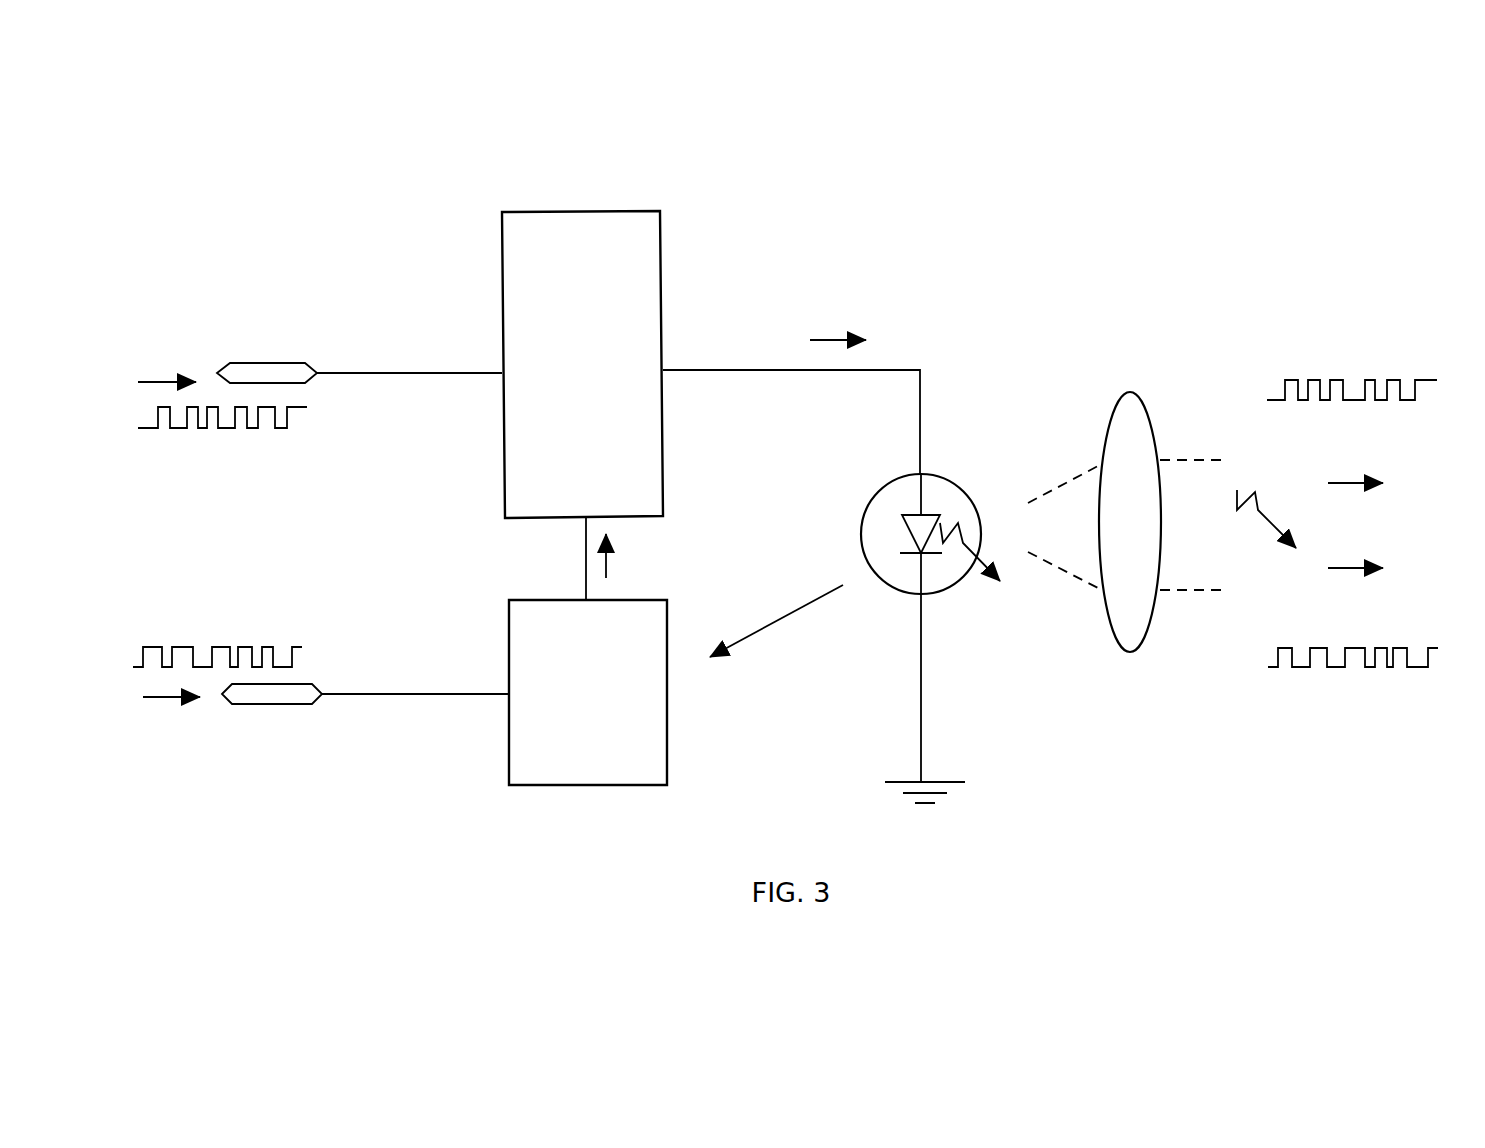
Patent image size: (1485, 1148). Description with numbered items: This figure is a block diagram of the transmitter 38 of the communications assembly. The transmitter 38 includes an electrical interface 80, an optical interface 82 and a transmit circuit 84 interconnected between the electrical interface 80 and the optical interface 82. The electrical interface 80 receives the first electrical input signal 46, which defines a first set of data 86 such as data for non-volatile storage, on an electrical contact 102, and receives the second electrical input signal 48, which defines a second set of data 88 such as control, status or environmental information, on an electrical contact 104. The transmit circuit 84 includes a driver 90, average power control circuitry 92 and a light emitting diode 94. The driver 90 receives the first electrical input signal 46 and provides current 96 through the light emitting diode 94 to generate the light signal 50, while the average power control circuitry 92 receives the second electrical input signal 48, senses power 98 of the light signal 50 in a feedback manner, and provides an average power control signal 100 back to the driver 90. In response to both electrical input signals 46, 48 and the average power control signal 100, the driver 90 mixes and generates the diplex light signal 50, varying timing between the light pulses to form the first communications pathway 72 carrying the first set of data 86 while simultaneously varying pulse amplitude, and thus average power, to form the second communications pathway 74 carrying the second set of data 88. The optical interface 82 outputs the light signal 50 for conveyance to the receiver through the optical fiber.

The transmitter 38 is at (869, 153).
The electrical interface 80 is at (287, 258).
The transmit circuit 84 is at (772, 235).
The optical interface 82 is at (1159, 338).
The first electrical input signal 46 is at (143, 382).
The second electrical input signal 48 is at (152, 697).
The first set of data 86 is at (227, 428).
The second set of data 88 is at (222, 646).
The electrical contact 102 is at (310, 364).
The electrical contact 104 is at (313, 685).
The driver 90 is at (571, 389).
The average power control circuitry 92 is at (576, 758).
The average power control signal 100 is at (606, 570).
The current 96 is at (822, 340).
The light emitting diode 94 is at (958, 487).
The light signal 50 is at (978, 557).
The power 98 is at (783, 617).
The first communications pathway 72 is at (1337, 483).
The second communications pathway 74 is at (1337, 568).